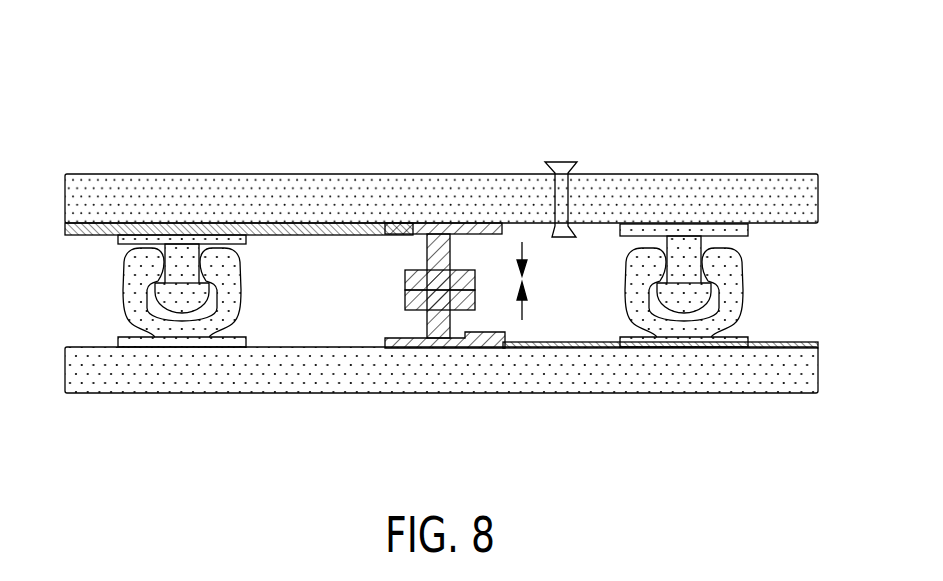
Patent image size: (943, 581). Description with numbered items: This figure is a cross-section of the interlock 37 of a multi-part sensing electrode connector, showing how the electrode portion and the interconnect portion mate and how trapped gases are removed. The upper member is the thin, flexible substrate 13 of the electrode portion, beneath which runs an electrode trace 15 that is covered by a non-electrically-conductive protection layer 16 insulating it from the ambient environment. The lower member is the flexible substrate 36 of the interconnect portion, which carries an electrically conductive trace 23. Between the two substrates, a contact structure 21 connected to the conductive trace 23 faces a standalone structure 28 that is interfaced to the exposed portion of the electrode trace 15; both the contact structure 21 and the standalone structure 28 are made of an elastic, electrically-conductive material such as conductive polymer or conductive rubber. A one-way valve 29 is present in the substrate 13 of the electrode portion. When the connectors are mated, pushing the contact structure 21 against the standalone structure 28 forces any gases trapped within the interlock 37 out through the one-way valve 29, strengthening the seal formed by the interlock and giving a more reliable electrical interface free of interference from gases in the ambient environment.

The interlock 37 is at (110, 93).
The substrate 13 is at (745, 185).
The substrate 36 is at (782, 382).
The electrode trace 15 is at (113, 226).
The conductive trace 23 is at (575, 344).
The protection layer 16 is at (180, 237).
The standalone structure 28 is at (393, 281).
The contact structure 21 is at (403, 347).
The one-way valve 29 is at (566, 148).